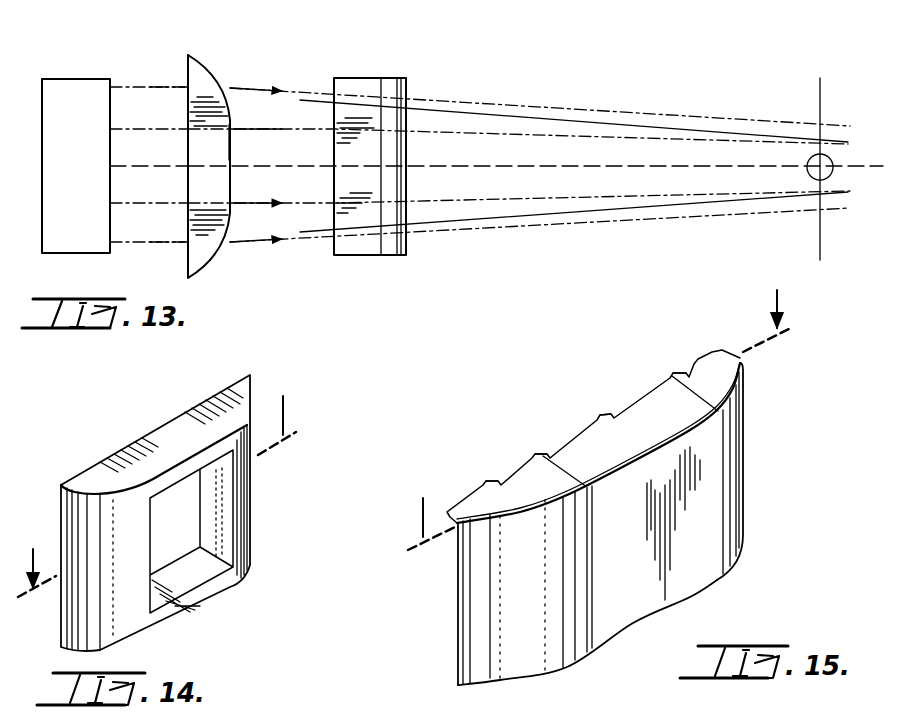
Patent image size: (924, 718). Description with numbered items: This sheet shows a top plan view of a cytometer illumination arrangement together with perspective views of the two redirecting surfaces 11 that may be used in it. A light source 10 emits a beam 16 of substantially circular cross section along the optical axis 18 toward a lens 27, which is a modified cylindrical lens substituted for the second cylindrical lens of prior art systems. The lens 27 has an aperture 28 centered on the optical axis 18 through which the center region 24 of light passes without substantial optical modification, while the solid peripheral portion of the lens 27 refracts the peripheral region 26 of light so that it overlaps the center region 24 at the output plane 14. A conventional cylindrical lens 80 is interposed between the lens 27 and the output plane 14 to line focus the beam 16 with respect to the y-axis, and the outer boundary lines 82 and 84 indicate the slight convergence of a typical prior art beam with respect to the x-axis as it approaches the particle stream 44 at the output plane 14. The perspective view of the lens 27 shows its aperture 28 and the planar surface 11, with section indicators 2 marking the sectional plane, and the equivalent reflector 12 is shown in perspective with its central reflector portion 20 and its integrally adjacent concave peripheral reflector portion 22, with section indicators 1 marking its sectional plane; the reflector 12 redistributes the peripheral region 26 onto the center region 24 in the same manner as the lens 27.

In FIG. 13, the light source 10 is at (57, 79).
In FIG. 13, the redirecting surface 11 is at (216, 250).
In FIG. 14, the redirecting surface 11 is at (246, 528).
In FIG. 15, the redirecting surface 11 is at (627, 463).
In FIG. 15, the reflector 12 is at (753, 502).
In FIG. 13, the output plane 14 is at (822, 112).
In FIG. 13, the beam 16 is at (127, 228).
In FIG. 13, the optical axis 18 is at (637, 166).
In FIG. 15, the central reflector portion 20 is at (593, 436).
In FIG. 15, the peripheral reflector portion 22 is at (565, 408).
In FIG. 13, the center region of light 24 is at (123, 175).
In FIG. 13, the peripheral region of light 26 is at (154, 110).
In FIG. 13, the lens 27 is at (215, 62).
In FIG. 14, the lens 27 is at (145, 428).
In FIG. 13, the aperture 28 is at (235, 125).
In FIG. 14, the aperture 28 is at (188, 545).
In FIG. 13, the stream 44 is at (834, 158).
In FIG. 13, the cylindrical lens 80 is at (358, 76).
In FIG. 13, the outer boundary line 82 is at (712, 115).
In FIG. 13, the outer boundary line 84 is at (668, 218).
In FIG. 15, the section line 1- 1 is at (600, 404).
In FIG. 14, the section line 2- 2 is at (157, 478).